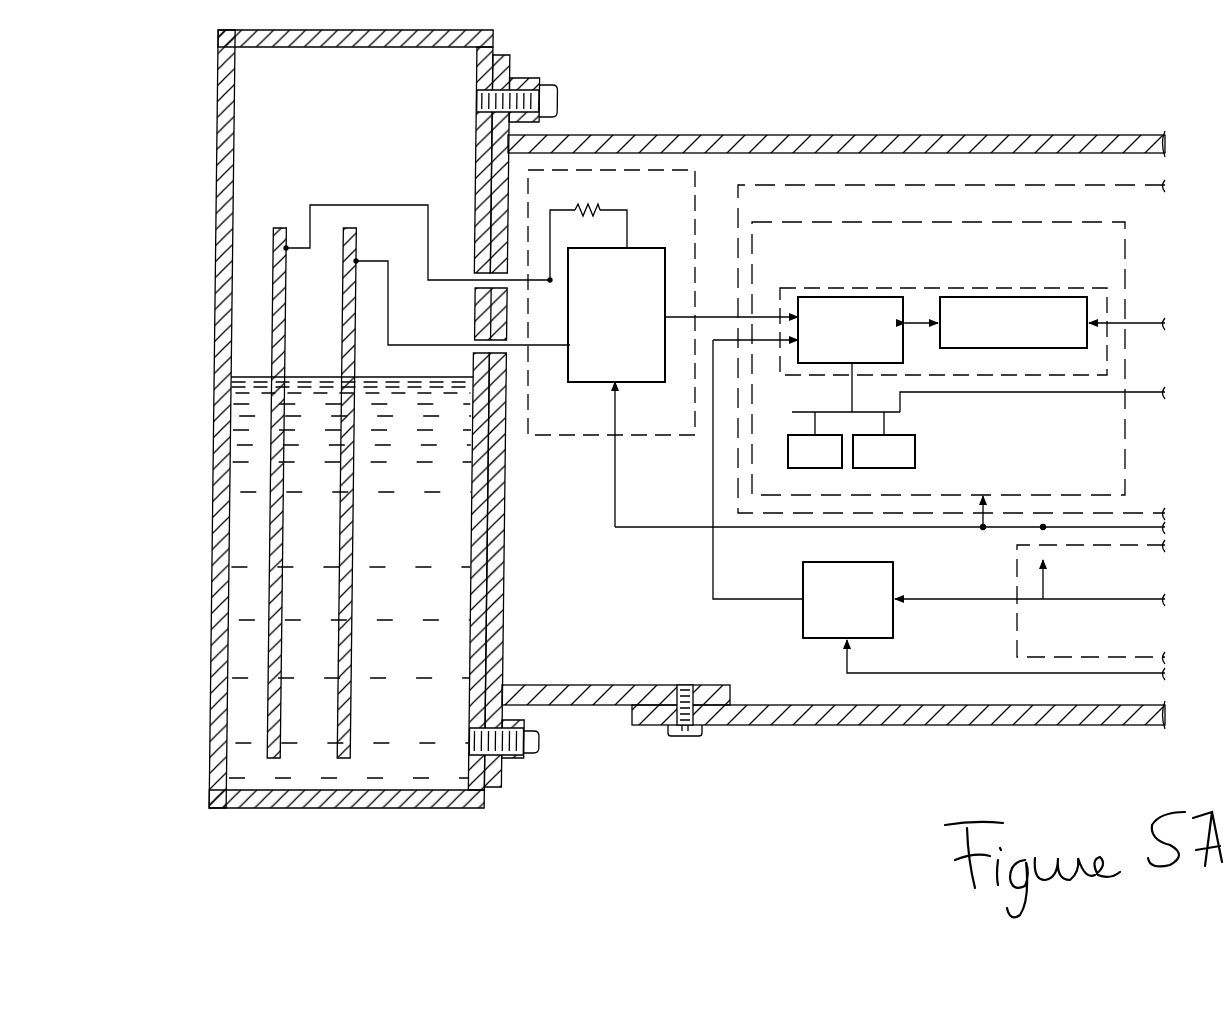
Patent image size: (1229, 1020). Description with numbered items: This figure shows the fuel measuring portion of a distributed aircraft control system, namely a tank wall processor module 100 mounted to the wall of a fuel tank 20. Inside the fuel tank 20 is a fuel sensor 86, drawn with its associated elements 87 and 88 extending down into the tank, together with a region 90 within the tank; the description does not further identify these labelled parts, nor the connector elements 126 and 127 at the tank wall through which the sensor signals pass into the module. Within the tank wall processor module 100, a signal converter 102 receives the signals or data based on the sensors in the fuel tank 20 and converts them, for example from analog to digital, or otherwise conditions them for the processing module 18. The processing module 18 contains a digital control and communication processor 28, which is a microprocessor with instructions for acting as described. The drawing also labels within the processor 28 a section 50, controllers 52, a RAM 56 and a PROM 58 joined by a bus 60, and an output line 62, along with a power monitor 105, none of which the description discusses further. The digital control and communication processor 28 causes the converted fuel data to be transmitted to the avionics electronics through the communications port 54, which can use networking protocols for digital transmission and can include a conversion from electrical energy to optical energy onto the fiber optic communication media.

The fuel tank 20 is at (218, 116).
The fuel sensor 86 is at (319, 272).
The sensor lead wire 87 is at (428, 245).
The sensor electrodes 88 is at (352, 728).
The fuel 90 is at (349, 577).
The tank wall processor module 100 is at (745, 135).
The signal converter 102 is at (597, 437).
The power monitor 105 is at (803, 618).
The connector lead 126 is at (512, 317).
The feedthrough connector 127 is at (474, 306).
The processing module 18 is at (951, 350).
The digital control and communication processor (DCCP) 28 is at (980, 222).
The controller section 50 is at (965, 376).
The controllers 52 is at (903, 358).
The communications port 54 is at (1088, 304).
The RAM 56 is at (788, 447).
The PROM 58 is at (916, 447).
The memory bus 60 is at (852, 396).
The output line 62 is at (1005, 393).